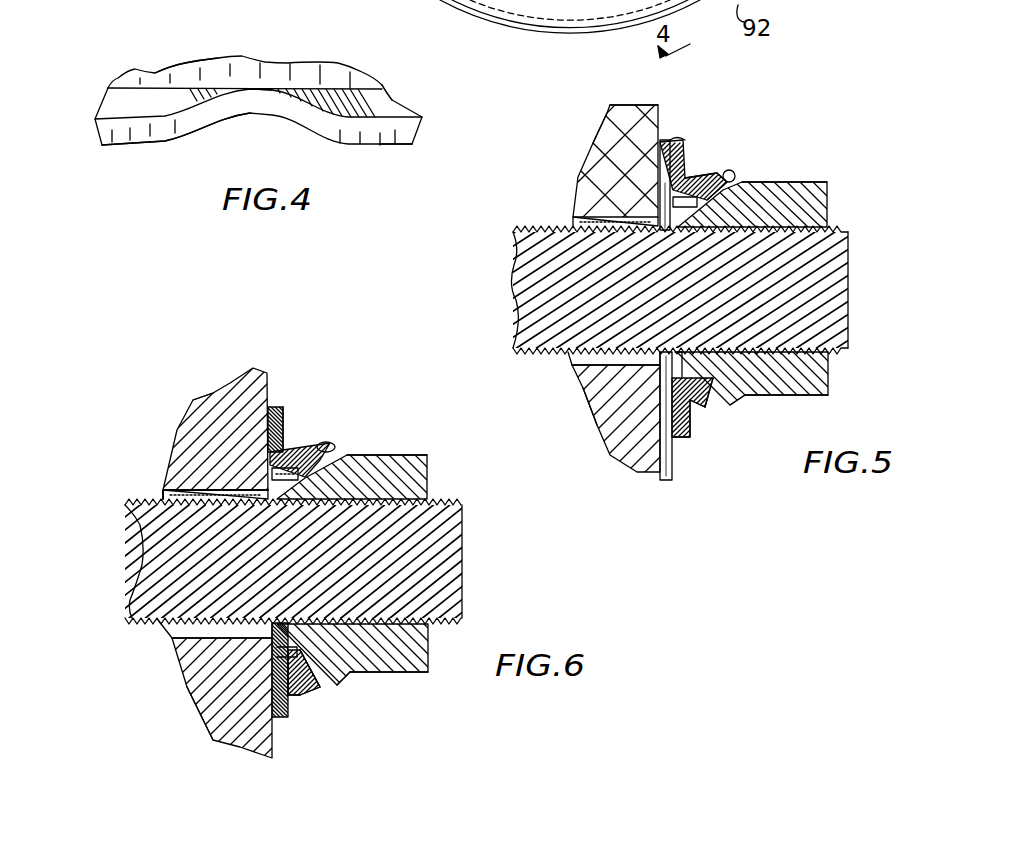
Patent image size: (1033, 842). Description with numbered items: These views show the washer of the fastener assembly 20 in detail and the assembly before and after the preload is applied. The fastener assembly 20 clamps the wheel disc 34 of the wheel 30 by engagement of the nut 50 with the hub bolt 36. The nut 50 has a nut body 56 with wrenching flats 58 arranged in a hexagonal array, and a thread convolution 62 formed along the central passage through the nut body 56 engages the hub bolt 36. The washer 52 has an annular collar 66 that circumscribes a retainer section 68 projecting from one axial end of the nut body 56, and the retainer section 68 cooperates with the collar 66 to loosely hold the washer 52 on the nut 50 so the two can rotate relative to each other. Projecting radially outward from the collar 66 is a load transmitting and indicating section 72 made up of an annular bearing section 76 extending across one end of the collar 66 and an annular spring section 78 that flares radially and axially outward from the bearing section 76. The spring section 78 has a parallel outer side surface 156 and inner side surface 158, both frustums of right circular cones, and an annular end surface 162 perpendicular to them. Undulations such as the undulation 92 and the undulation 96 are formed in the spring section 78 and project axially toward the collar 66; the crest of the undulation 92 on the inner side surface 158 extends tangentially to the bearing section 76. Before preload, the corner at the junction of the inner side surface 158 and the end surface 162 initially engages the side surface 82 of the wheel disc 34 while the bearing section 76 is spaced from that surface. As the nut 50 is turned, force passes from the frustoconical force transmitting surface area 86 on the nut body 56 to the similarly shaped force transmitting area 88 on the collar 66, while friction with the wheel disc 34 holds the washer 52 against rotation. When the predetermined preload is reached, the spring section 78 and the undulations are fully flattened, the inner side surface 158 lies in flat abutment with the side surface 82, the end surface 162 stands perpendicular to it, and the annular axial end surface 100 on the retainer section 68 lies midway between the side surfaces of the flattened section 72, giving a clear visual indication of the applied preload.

In FIG. 5, the fastener assembly 20 is at (773, 154).
In FIG. 6, the fastener assembly 20 is at (400, 428).
In FIG. 5, the wheel 30 is at (603, 450).
In FIG. 6, the wheel 30 is at (220, 742).
In FIG. 5, the wheel disc 34 is at (605, 407).
In FIG. 6, the wheel disc 34 is at (195, 670).
In FIG. 5, the hub bolt 36 is at (535, 300).
In FIG. 6, the hub bolt 36 is at (142, 595).
In FIG. 5, the nut 50 is at (826, 396).
In FIG. 6, the nut 50 is at (426, 672).
In FIG. 4, the washer 52 is at (400, 78).
In FIG. 5, the washer 52 is at (708, 398).
In FIG. 6, the washer 52 is at (305, 692).
In FIG. 5, the nut body 56 is at (815, 195).
In FIG. 6, the nut body 56 is at (420, 472).
In FIG. 5, the wrenching flats 58 is at (805, 397).
In FIG. 6, the wrenching flats 58 is at (380, 672).
In FIG. 5, the thread convolution 62 is at (820, 358).
In FIG. 6, the thread convolution 62 is at (420, 630).
In FIG. 4, the collar 66 is at (195, 75).
In FIG. 5, the collar 66 is at (714, 389).
In FIG. 6, the collar 66 is at (318, 685).
In FIG. 5, the retainer section 68 is at (680, 360).
In FIG. 6, the retainer section 68 is at (232, 680).
In FIG. 5, the load transmitting and indicating section 72 is at (668, 140).
In FIG. 6, the load transmitting and indicating section 72 is at (293, 695).
In FIG. 5, the bearing section 76 is at (700, 403).
In FIG. 6, the bearing section 76 is at (310, 693).
In FIG. 4, the spring section 78 is at (135, 145).
In FIG. 5, the spring section 78 is at (682, 440).
In FIG. 6, the spring section 78 is at (294, 700).
In FIG. 5, the side surface 82 is at (665, 478).
In FIG. 6, the side surface 82 is at (278, 720).
In FIG. 5, the force transmitting surface area 86 is at (735, 172).
In FIG. 6, the force transmitting surface area 86 is at (328, 443).
In FIG. 5, the force transmitting area 88 is at (715, 178).
In FIG. 6, the force transmitting area 88 is at (312, 448).
In FIG. 4, the undulation 92 is at (280, 90).
In FIG. 5, the undulation 92 is at (690, 432).
In FIG. 5, the undulation 96 is at (690, 148).
In FIG. 6, the undulation 96 is at (285, 474).
In FIG. 5, the annular axial end surface 100 is at (665, 205).
In FIG. 6, the annular axial end surface 100 is at (275, 478).
In FIG. 4, the outer side surface 156 is at (395, 100).
In FIG. 5, the outer side surface 156 is at (700, 160).
In FIG. 6, the outer side surface 156 is at (290, 440).
In FIG. 4, the inner side surface 158 is at (388, 145).
In FIG. 5, the inner side surface 158 is at (645, 165).
In FIG. 6, the inner side surface 158 is at (268, 410).
In FIG. 5, the annular end surface 162 is at (667, 150).
In FIG. 6, the annular end surface 162 is at (272, 407).